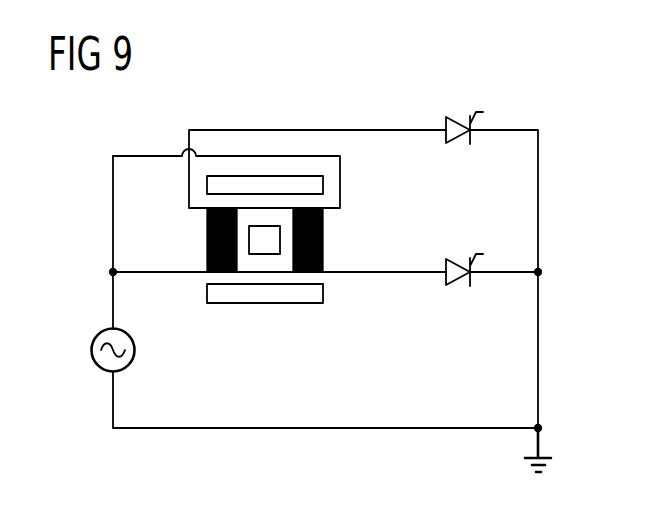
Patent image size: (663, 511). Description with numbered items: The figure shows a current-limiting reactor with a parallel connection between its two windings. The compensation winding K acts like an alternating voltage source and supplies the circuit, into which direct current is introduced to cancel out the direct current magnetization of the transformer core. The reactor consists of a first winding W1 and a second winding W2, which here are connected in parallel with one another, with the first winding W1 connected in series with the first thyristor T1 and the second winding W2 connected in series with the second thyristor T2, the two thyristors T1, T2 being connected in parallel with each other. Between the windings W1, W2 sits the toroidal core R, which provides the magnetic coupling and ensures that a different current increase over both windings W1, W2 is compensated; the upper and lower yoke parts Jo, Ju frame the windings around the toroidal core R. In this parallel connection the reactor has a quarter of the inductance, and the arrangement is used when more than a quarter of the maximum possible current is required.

The second thyristor T2 is at (452, 125).
The first thyristor T1 is at (452, 267).
The upper yoke Jo is at (323, 184).
The lower yoke Ju is at (323, 291).
The first winding W1 is at (206, 242).
The second winding W2 is at (324, 242).
The toroidal core R is at (264, 254).
The compensation winding K is at (91, 349).